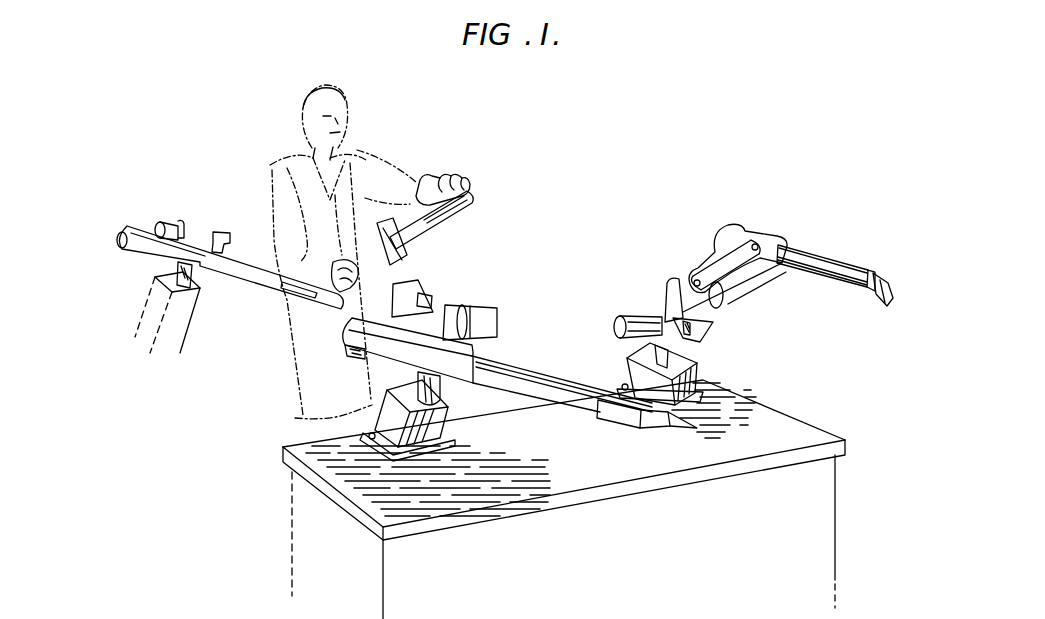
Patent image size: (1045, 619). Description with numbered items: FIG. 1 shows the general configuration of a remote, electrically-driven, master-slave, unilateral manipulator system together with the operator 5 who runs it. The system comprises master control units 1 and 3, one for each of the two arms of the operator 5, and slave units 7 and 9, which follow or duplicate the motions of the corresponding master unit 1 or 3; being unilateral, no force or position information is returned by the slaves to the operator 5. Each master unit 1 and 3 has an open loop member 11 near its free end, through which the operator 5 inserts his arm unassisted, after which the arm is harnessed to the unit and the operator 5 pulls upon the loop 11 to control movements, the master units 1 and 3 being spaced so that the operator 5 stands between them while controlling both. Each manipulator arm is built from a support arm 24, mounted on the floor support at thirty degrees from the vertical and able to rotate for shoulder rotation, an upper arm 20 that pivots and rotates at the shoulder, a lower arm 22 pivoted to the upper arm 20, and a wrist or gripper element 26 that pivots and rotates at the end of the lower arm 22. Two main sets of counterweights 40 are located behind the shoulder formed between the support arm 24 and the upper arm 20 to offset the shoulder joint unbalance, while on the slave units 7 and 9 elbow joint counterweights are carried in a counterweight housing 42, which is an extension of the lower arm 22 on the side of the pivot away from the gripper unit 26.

The master control unit 1 is at (498, 325).
The master control unit 3 is at (482, 202).
The operator 5 is at (368, 180).
The slave unit 7 is at (500, 402).
The slave unit 9 is at (805, 239).
The open loop member 11 is at (443, 148).
The upper arm 20 is at (453, 330).
The lower arm 22 is at (267, 282).
The support arm 24 is at (160, 285).
The wrist or gripper element 26 is at (667, 423).
The counterweights 40 is at (220, 230).
The counterweight housing 42 is at (383, 358).